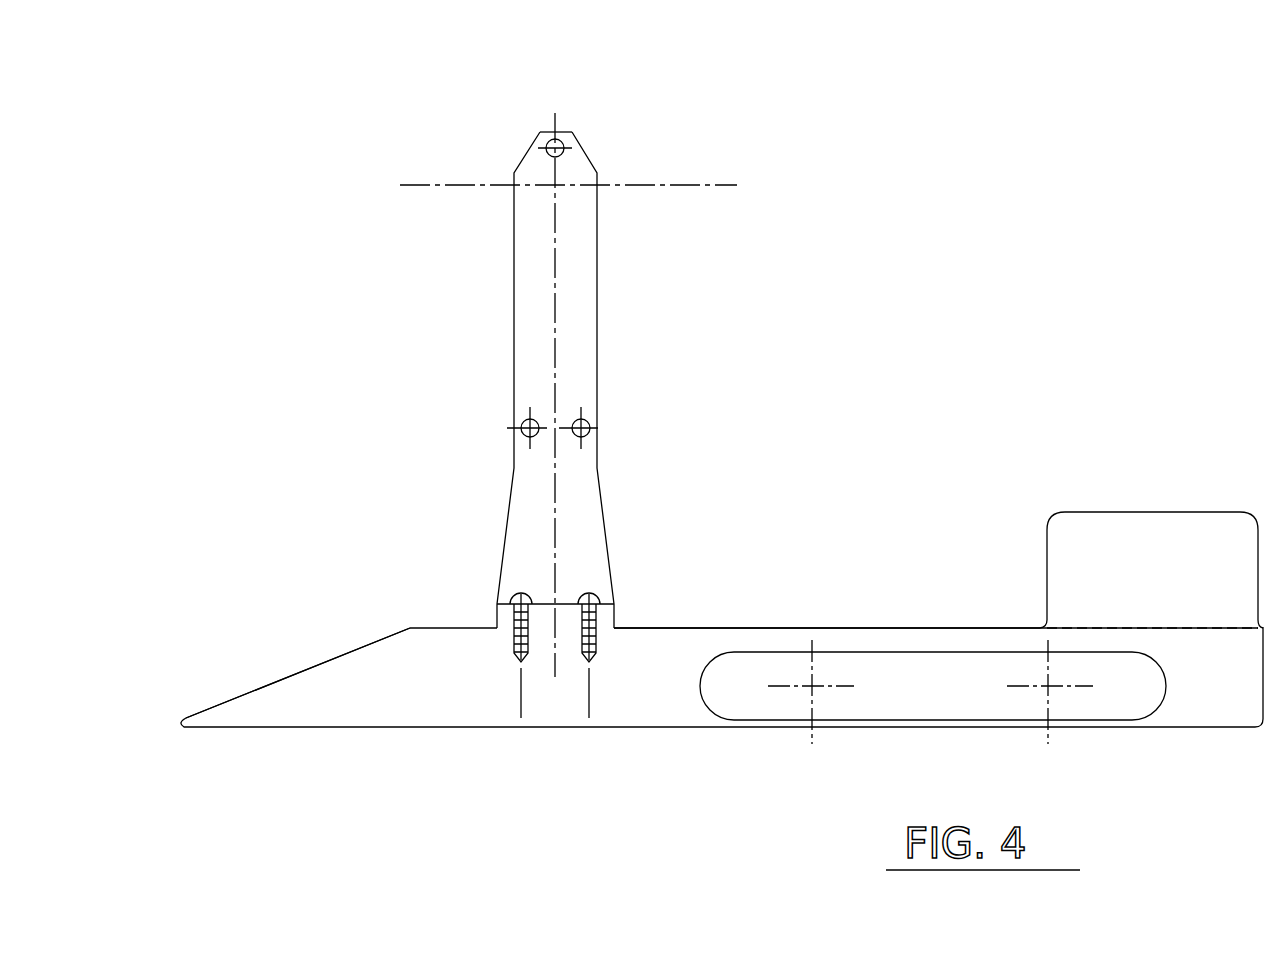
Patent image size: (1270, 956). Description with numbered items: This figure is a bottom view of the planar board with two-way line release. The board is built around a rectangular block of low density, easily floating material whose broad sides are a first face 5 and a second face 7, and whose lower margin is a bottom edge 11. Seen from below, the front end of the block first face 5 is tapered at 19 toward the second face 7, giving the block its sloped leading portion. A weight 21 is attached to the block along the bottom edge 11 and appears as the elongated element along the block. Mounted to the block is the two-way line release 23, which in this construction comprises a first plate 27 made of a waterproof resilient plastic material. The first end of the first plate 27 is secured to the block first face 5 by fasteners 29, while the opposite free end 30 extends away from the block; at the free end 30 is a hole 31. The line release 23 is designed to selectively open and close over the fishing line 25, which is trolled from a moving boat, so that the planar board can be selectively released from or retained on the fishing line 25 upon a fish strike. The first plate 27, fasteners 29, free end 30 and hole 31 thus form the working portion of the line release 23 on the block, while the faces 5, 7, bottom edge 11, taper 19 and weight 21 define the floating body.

The first face 5 is at (960, 628).
The second face 7 is at (392, 728).
The bottom edge 11 is at (1185, 698).
The taper 19 is at (318, 663).
The weight 21 is at (1078, 698).
The two-way line release 23 is at (610, 548).
The fishing line 25 is at (653, 185).
The first plate 27 is at (596, 448).
The fasteners 29 is at (589, 595).
The free end 30 is at (548, 131).
The hole 31 is at (557, 140).